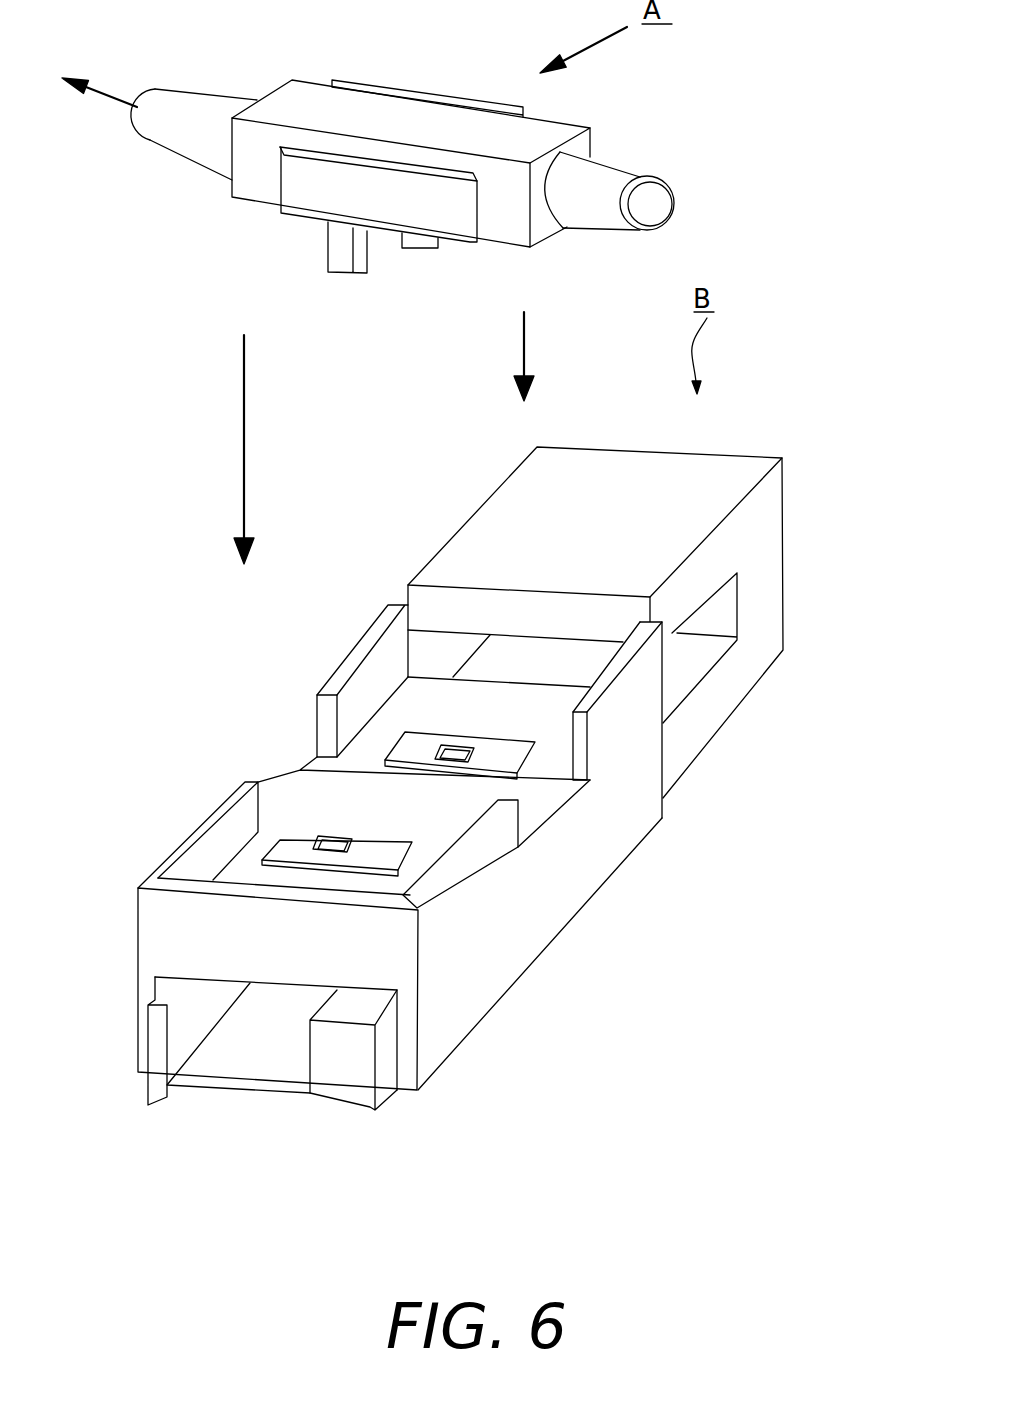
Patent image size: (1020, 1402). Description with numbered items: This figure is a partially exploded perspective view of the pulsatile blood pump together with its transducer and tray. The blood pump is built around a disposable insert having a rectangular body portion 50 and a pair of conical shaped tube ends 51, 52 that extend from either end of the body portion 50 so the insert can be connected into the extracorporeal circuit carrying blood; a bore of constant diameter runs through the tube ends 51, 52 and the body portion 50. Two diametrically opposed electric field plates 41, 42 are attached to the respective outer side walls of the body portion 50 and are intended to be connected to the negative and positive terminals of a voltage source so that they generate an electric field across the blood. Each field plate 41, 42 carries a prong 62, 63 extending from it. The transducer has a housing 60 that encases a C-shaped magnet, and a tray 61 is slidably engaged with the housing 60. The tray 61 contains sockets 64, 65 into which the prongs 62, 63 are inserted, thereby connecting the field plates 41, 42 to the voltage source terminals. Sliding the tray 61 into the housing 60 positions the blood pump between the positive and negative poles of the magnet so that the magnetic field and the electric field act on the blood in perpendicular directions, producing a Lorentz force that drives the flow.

The electric field plate 41 is at (435, 100).
The electric field plate 42 is at (294, 212).
The body portion 50 is at (233, 198).
The tube end 51 is at (608, 172).
The tube end 52 is at (169, 141).
The housing 60 is at (761, 457).
The tray 61 is at (352, 651).
The prong 62 is at (428, 250).
The prong 63 is at (345, 275).
The socket 64 is at (447, 770).
The socket 65 is at (349, 843).